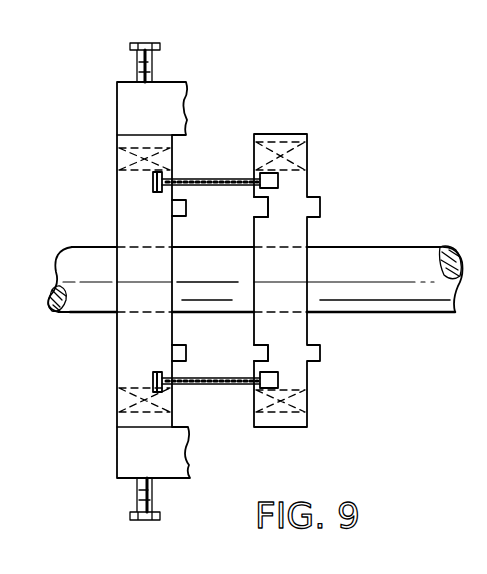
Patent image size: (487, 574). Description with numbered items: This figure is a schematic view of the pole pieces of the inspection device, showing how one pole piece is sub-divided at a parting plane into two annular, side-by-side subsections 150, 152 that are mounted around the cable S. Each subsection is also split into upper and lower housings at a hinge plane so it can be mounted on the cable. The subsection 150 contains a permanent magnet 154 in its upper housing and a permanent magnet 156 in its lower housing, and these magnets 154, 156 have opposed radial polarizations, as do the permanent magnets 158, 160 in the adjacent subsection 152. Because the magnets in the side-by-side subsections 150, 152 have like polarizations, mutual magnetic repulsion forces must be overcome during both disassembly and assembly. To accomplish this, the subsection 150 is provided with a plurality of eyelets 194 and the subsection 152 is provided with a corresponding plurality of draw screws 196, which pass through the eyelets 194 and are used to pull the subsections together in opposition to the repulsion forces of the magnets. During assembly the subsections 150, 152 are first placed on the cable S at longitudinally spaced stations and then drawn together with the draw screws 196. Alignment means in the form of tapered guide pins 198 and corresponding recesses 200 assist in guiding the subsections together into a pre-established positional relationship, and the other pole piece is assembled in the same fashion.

The cable S is at (95, 314).
The subsection 150 is at (108, 234).
The subsection 152 is at (322, 238).
The permanent magnet 154 is at (117, 146).
The permanent magnet 156 is at (305, 140).
The permanent magnet 158 is at (117, 418).
The permanent magnet 160 is at (305, 420).
The eyelets 194 is at (152, 183).
The draw screws 196 is at (218, 178).
The tapered guide pins 198 is at (172, 222).
The recesses 200 is at (258, 199).